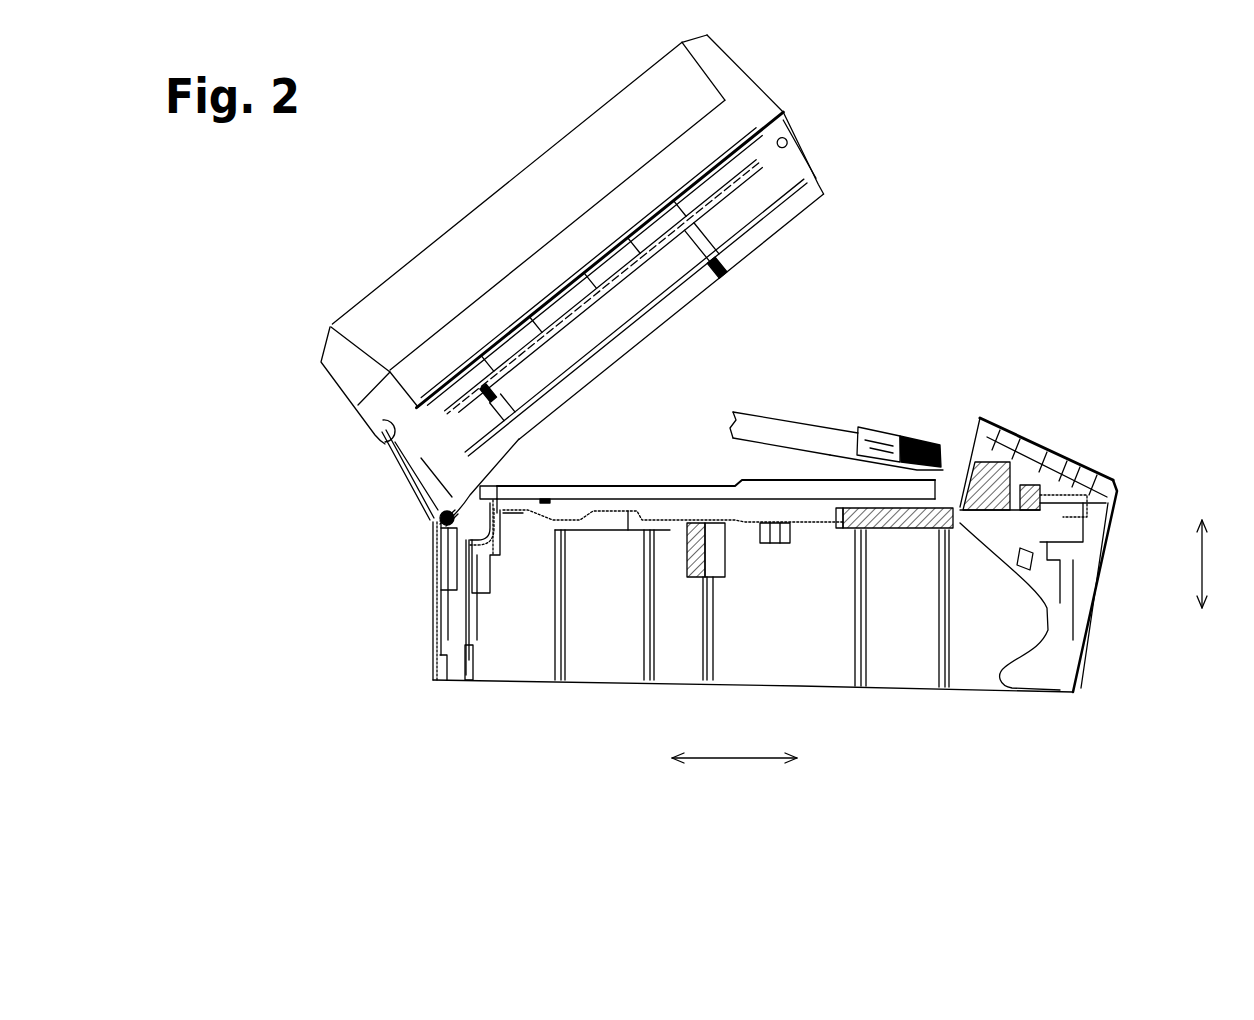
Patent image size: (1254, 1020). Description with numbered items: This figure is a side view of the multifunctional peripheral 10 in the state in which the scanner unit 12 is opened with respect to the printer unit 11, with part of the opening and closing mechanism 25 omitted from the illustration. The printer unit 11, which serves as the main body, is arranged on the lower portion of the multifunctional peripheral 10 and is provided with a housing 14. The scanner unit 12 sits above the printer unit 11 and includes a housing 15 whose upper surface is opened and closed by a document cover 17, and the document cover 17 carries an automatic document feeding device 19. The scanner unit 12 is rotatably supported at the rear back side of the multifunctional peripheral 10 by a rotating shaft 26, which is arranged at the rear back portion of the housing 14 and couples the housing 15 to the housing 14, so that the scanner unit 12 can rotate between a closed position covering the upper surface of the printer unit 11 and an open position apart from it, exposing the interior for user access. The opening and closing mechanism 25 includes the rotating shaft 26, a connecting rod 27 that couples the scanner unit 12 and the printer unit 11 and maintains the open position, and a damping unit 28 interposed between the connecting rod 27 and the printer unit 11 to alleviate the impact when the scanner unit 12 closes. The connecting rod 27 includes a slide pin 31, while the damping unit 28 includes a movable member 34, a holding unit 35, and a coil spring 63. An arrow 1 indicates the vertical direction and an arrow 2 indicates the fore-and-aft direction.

The arrow 1 is at (1207, 562).
The arrow 2 is at (732, 762).
The multifunctional peripheral 10 is at (309, 609).
The printer unit 11 is at (432, 652).
The scanner unit 12 is at (346, 440).
The housing 14 is at (438, 582).
The housing 15 is at (325, 355).
The document cover 17 is at (773, 101).
The automatic document feeding device 19 is at (460, 218).
The opening and closing mechanism 25 is at (872, 354).
The rotating shaft 26 is at (437, 523).
The connecting rod 27 is at (752, 409).
The damping unit 28 is at (939, 428).
The slide pin 31 is at (890, 520).
The movable member 34 is at (857, 447).
The holding unit 35 is at (874, 436).
The coil spring 63 is at (963, 455).